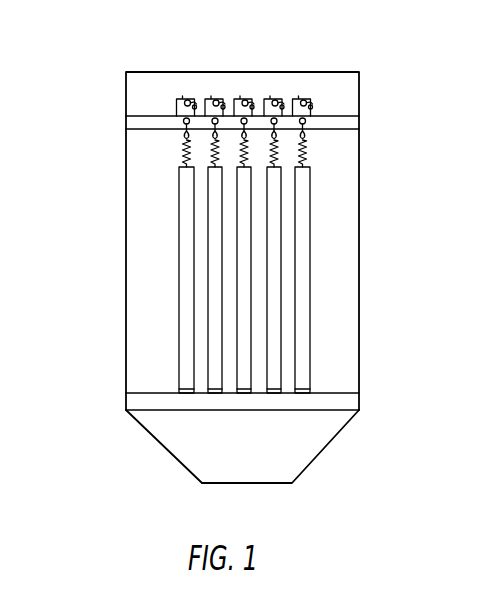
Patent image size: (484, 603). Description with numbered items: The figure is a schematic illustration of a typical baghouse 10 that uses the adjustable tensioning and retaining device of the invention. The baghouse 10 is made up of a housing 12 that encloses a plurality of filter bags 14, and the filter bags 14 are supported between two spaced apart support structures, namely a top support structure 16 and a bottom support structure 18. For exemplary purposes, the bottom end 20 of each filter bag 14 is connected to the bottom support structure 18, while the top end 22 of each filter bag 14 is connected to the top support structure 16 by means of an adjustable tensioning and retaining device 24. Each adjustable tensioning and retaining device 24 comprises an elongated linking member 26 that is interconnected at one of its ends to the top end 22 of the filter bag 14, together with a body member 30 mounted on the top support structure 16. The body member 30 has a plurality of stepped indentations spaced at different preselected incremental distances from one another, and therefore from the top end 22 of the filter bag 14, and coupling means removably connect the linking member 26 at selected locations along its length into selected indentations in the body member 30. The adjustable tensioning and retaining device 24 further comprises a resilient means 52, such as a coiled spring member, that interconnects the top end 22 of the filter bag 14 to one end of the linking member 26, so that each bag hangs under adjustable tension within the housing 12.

The baghouse 10 is at (263, 258).
The housing 12 is at (360, 220).
The filter bags 14 is at (240, 266).
The top support structure 16 is at (345, 122).
The bottom support structure 18 is at (324, 401).
The bottom end 20 is at (178, 388).
The top end 22 is at (177, 167).
The adjustable tensioning and retaining device 24 is at (191, 97).
The elongated linking member 26 is at (177, 118).
The body member 30 is at (175, 110).
The resilient means 52 is at (182, 150).